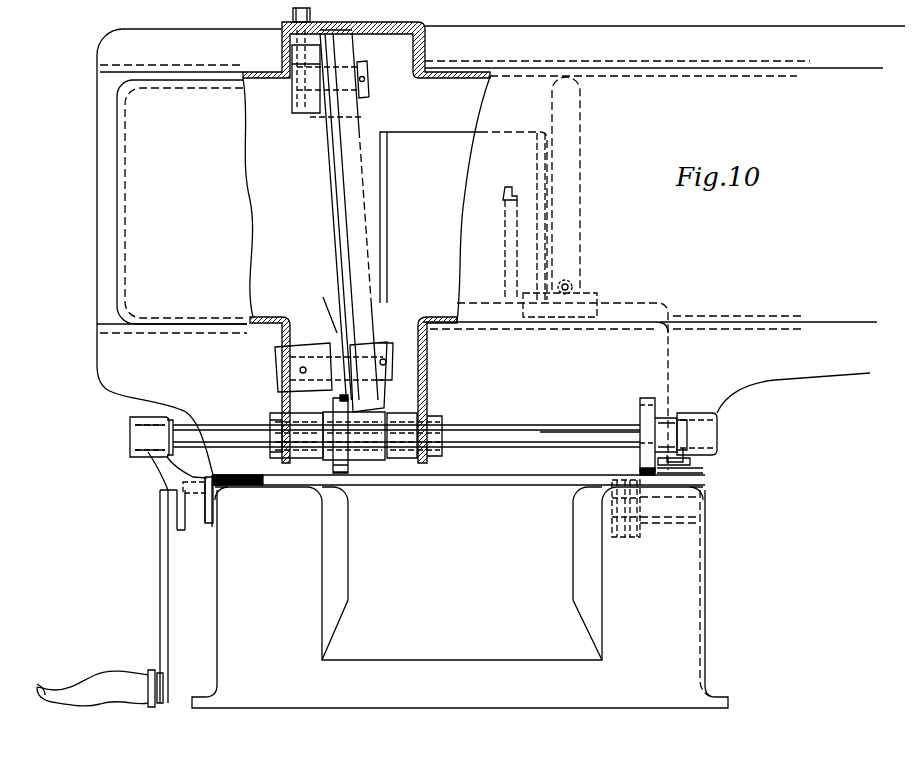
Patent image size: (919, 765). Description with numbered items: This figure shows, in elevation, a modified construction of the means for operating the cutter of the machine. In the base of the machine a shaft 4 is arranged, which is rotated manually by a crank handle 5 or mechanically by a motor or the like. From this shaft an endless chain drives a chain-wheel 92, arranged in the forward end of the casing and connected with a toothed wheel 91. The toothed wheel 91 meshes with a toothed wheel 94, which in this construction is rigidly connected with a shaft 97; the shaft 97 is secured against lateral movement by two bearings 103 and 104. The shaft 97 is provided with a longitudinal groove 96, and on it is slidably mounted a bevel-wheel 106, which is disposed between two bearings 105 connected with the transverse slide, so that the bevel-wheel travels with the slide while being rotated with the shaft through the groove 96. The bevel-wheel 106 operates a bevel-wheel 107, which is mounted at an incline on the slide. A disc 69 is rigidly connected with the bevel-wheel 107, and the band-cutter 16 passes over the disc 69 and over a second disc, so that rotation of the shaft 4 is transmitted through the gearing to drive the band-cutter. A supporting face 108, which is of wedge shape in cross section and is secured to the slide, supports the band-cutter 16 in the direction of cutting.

The shaft 4 is at (180, 537).
The crank handle 5 is at (98, 680).
The band-cutter 16 is at (350, 205).
The disc 69 is at (370, 337).
The toothed wheel 91 is at (657, 543).
The chain-wheel 92 is at (630, 543).
The toothed wheel 94 is at (648, 415).
The longitudinal groove 96 is at (531, 437).
The shaft 97 is at (573, 429).
The bearing 103 is at (717, 432).
The bearing 104 is at (130, 438).
The bearings 105 is at (297, 413).
The bevel-wheel 106 is at (340, 412).
The bevel-wheel 107 is at (337, 333).
The supporting face 108 is at (340, 248).